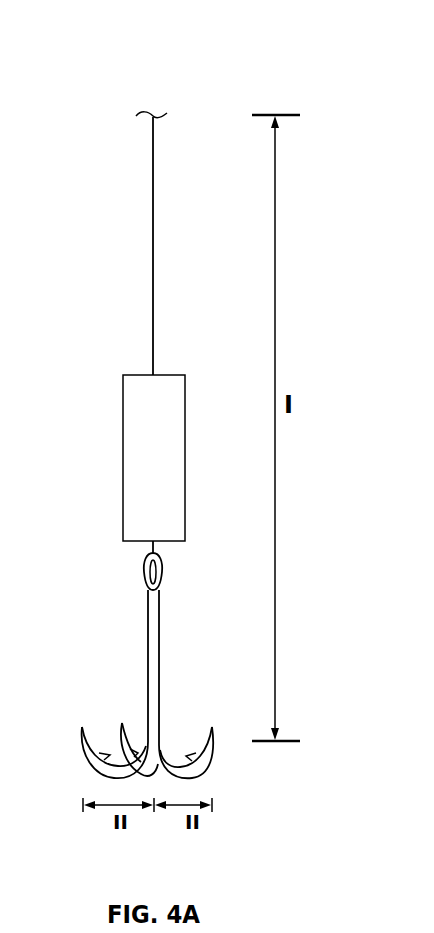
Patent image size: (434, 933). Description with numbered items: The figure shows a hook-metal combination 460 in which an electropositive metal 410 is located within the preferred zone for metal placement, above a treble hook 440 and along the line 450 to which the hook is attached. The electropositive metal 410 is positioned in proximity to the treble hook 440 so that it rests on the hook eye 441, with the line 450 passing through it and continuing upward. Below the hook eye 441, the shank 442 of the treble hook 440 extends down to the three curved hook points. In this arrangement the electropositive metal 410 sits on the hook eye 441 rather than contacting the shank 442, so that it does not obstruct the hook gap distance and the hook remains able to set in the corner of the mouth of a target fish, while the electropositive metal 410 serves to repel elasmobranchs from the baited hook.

The hook-metal combination 460 is at (128, 62).
The line 450 is at (152, 216).
The electropositive metal 410 is at (122, 446).
The hook eye 441 is at (144, 568).
The shank 442 is at (147, 648).
The treble hook 440 is at (90, 757).